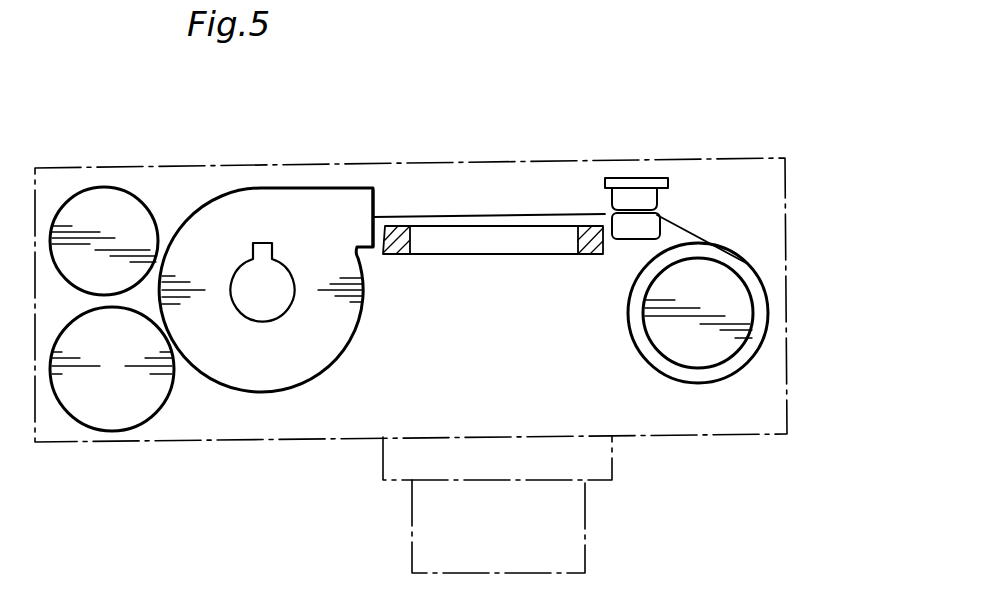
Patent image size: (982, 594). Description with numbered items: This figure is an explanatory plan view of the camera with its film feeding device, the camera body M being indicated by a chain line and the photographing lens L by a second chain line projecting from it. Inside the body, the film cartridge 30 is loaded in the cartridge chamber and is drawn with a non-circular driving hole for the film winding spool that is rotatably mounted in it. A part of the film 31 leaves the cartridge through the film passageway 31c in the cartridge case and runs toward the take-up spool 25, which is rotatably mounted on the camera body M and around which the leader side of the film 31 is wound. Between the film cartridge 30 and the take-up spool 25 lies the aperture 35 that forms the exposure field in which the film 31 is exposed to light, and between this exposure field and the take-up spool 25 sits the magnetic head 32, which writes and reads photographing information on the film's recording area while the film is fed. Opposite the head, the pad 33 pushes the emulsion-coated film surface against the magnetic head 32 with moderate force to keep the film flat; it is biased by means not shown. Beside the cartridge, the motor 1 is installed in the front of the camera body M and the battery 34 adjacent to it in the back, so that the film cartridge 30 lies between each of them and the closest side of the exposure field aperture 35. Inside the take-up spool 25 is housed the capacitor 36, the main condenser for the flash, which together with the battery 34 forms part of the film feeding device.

The motor 1 is at (107, 390).
The take-up spool 25 is at (762, 278).
The film cartridge 30 is at (265, 240).
The film 31 is at (421, 213).
The film passageway 31c is at (380, 200).
The magnetic head 32 is at (633, 195).
The pad 33 is at (660, 222).
The battery 34 is at (110, 200).
The aperture 35 is at (578, 232).
The capacitor 36 is at (712, 345).
The camera body M is at (790, 398).
The photographing lens L is at (585, 538).